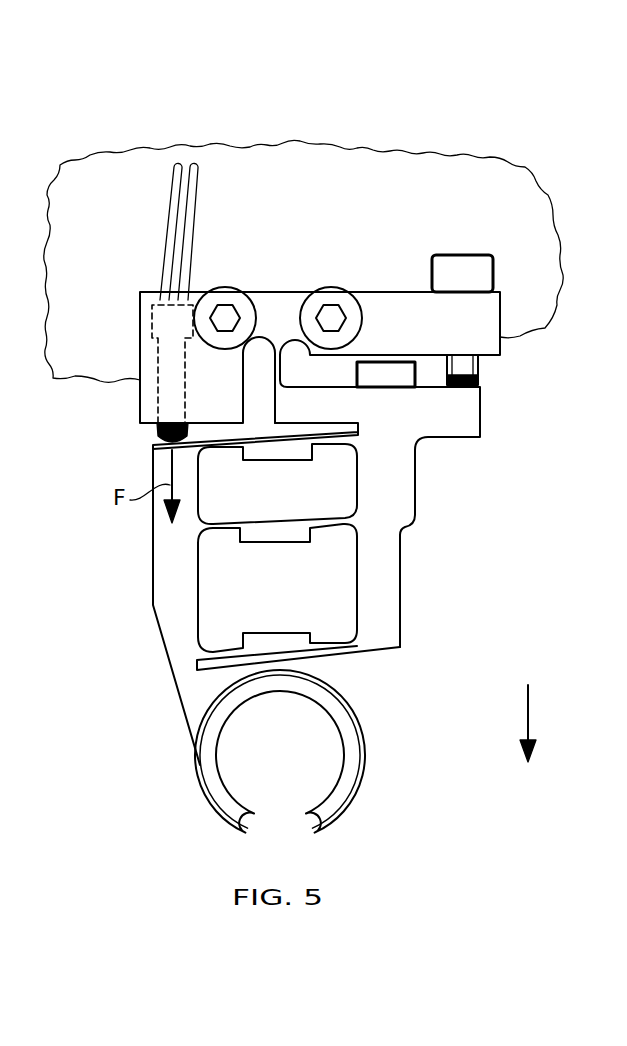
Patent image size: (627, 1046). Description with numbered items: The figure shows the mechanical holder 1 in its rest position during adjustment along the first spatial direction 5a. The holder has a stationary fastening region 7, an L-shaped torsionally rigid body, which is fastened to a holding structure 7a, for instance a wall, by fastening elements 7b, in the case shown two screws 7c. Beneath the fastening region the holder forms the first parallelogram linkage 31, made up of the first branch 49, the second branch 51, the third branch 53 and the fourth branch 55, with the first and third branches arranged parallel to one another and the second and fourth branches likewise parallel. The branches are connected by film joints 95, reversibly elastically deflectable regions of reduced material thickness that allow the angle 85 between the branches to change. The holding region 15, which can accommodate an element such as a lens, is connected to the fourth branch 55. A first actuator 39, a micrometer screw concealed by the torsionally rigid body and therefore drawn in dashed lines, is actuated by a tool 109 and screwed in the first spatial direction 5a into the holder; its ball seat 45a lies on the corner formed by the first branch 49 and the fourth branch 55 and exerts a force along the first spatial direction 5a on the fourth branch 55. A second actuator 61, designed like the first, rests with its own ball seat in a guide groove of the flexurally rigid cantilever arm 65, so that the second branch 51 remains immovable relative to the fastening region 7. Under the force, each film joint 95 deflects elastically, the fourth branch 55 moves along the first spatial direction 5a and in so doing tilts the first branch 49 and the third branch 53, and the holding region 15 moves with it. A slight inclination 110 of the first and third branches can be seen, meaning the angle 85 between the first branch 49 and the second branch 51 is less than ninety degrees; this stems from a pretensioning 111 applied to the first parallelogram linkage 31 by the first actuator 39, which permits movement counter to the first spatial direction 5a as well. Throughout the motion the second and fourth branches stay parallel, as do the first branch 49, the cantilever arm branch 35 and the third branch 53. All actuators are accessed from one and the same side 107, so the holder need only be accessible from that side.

The mechanical holder 1 is at (390, 169).
The stationary fastening region 7 is at (487, 312).
The holding structure 7a is at (335, 222).
The fastening elements 7b is at (226, 290).
The screws 7c is at (340, 290).
The side 107 is at (169, 293).
The tool 109 is at (196, 200).
The first actuator 39 is at (152, 320).
The ball seat 45a is at (157, 440).
The second actuator 61 is at (478, 370).
The cantilever arm 65 is at (481, 408).
The first parallelogram linkage 31 is at (358, 533).
The pretensioning 111 is at (358, 533).
The first branch 49 is at (267, 447).
The inclination 110 is at (320, 420).
The angle 85 is at (349, 456).
The film joints 95 is at (314, 503).
The cantilever arm branch 35 is at (282, 534).
The third branch 53 is at (279, 632).
The second branch 51 is at (388, 568).
The fourth branch 55 is at (163, 612).
The holding region 15 is at (400, 768).
The first spatial direction 5a is at (532, 708).